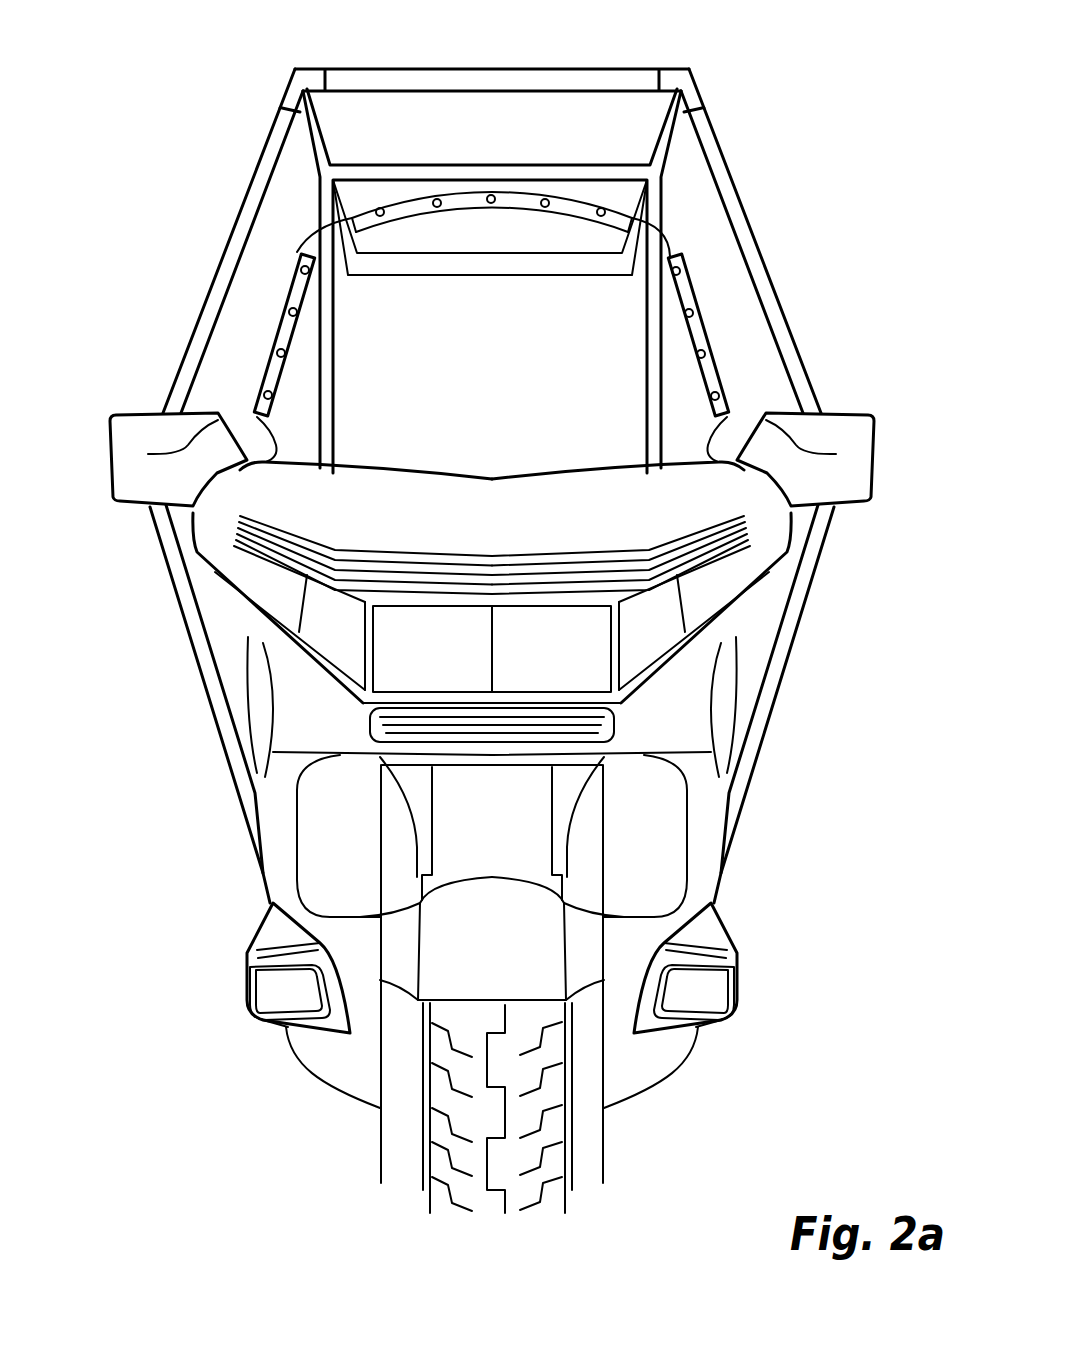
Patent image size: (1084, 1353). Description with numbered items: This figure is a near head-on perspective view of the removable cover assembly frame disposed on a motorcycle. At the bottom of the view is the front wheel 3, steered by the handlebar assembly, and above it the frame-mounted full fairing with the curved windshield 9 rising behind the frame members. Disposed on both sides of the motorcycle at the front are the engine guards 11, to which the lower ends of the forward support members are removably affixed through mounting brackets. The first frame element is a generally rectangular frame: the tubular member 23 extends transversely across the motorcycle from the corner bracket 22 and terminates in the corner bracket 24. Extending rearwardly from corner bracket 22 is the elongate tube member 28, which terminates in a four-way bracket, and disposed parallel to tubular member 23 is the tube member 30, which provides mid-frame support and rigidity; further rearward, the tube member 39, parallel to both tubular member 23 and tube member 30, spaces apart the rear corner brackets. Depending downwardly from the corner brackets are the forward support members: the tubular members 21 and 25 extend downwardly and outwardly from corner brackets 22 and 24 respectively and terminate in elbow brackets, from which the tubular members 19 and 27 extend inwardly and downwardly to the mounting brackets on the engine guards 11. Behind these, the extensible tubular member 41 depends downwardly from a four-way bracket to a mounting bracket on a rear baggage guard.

The front wheel 3 is at (567, 1108).
The curved windshield 9 is at (730, 335).
The engine guards 11 is at (554, 1005).
The tubular member 19 is at (826, 658).
The tubular member 21 is at (775, 260).
The corner bracket 22 is at (751, 90).
The tubular member 23 is at (492, 45).
The corner bracket 24 is at (239, 90).
The tubular member 25 is at (217, 260).
The tubular member 27 is at (172, 658).
The elongate tube member 28 is at (565, 282).
The tube member 30 is at (501, 85).
The tube member 39 is at (483, 133).
The extensible tubular member 41 is at (220, 335).